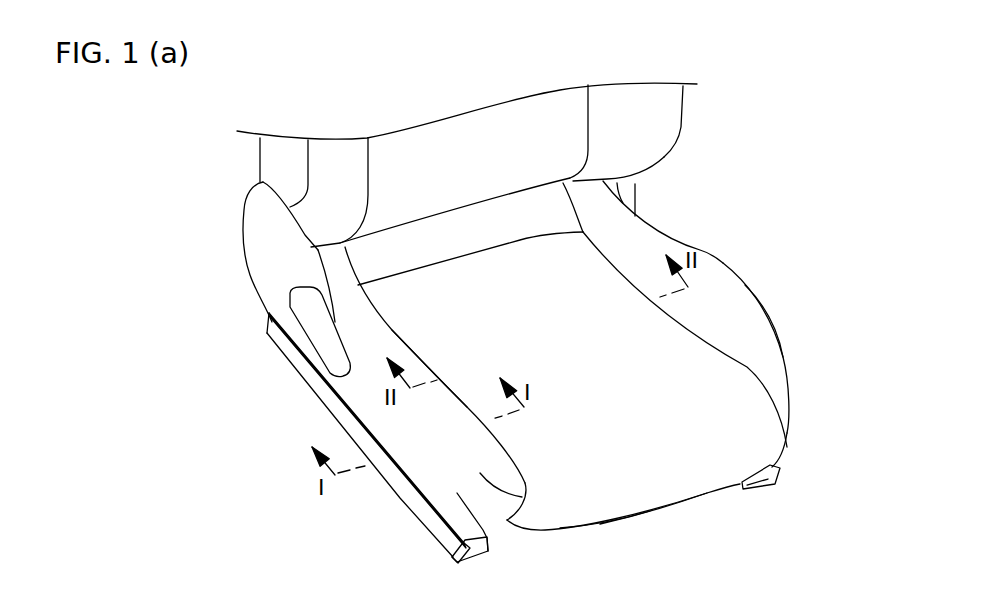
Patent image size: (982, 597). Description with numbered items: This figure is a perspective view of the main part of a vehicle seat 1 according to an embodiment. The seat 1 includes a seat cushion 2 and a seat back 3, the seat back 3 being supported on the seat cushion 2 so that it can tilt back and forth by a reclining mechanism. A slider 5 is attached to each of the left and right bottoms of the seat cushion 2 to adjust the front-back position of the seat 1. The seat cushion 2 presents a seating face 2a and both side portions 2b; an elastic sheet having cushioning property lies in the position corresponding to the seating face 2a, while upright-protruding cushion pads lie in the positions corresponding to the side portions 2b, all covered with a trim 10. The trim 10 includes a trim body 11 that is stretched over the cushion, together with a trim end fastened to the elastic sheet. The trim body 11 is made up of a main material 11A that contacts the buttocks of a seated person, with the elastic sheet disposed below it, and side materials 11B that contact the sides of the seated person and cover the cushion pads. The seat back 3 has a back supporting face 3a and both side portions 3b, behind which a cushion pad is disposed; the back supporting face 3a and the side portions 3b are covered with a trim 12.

The vehicle seat 1 is at (743, 237).
The seat cushion 2 is at (773, 317).
The seating face 2a is at (630, 371).
The side portions 2b is at (370, 385).
The seat back 3 is at (683, 99).
The back supporting face 3a is at (430, 157).
The side portions 3b is at (332, 168).
The slider 5 is at (423, 503).
The trim 10 is at (693, 503).
The trim body 11 is at (673, 233).
The main material 11A is at (633, 485).
The side materials 11B is at (710, 277).
The trim 12 is at (660, 157).